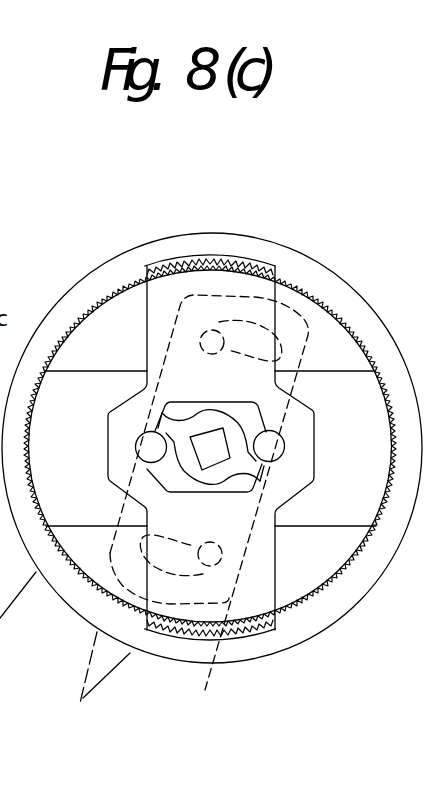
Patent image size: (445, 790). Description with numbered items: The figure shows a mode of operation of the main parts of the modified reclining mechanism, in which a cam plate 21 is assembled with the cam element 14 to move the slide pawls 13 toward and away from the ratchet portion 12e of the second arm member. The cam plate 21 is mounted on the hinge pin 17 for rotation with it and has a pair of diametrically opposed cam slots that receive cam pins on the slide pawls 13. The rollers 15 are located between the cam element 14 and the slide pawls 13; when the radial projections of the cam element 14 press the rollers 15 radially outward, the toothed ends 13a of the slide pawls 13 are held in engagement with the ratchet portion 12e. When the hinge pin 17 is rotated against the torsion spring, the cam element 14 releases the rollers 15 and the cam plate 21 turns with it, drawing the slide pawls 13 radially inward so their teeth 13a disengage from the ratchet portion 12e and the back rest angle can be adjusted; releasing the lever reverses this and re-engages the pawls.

The ratchet portion 12e is at (163, 266).
The slide pawl 13 is at (144, 304).
The pawl teeth 13a is at (216, 270).
The cam element 14 is at (262, 488).
The roller 15 is at (144, 445).
The hinge pin 17 is at (200, 443).
The cam plate 21 is at (287, 305).